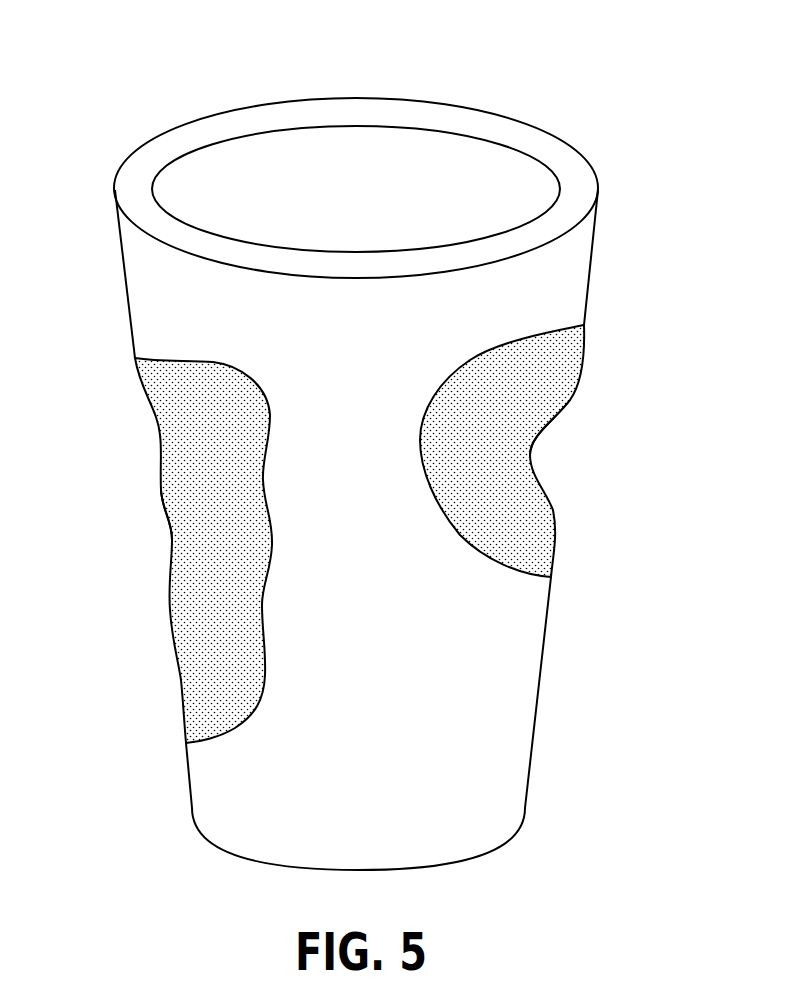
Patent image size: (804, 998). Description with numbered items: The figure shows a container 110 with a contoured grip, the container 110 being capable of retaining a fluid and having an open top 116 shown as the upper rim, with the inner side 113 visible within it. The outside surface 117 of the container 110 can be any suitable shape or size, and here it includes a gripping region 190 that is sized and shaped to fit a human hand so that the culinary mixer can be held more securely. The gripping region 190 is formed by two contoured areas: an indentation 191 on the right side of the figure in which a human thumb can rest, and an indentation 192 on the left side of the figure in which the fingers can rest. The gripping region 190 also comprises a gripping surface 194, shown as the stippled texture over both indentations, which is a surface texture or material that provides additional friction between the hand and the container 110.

The container 110 is at (369, 453).
The inner side 113 is at (329, 155).
The open top 116 is at (460, 122).
The outside surface 117 is at (598, 269).
The gripping region 190 is at (550, 471).
The indentation 191 is at (556, 418).
The indentation 192 is at (162, 437).
The gripping surface 194 is at (357, 534).